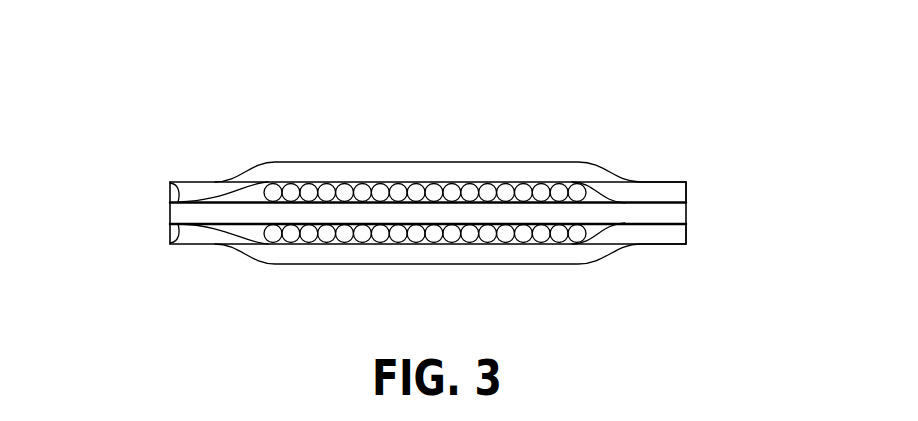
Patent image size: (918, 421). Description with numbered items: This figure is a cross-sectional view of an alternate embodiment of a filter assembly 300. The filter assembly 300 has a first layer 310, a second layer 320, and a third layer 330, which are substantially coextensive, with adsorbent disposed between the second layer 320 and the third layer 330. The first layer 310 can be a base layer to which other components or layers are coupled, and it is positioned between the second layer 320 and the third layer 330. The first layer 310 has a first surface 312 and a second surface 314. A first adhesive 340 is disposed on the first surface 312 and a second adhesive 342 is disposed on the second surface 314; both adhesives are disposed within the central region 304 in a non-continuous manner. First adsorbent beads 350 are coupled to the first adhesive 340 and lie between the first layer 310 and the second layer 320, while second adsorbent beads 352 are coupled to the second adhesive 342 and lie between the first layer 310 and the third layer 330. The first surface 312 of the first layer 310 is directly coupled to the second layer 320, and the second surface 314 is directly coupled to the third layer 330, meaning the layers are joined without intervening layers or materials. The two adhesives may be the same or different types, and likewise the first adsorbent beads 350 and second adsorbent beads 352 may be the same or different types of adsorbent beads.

The filter assembly 300 is at (580, 76).
The central region 304 is at (495, 148).
The first layer 310 is at (668, 213).
The first surface 312 is at (177, 197).
The second surface 314 is at (175, 236).
The second layer 320 is at (678, 193).
The third layer 330 is at (678, 233).
The first adhesive 340 is at (257, 179).
The second adhesive 342 is at (256, 246).
The first adsorbent beads 350 is at (452, 190).
The second adsorbent beads 352 is at (343, 237).